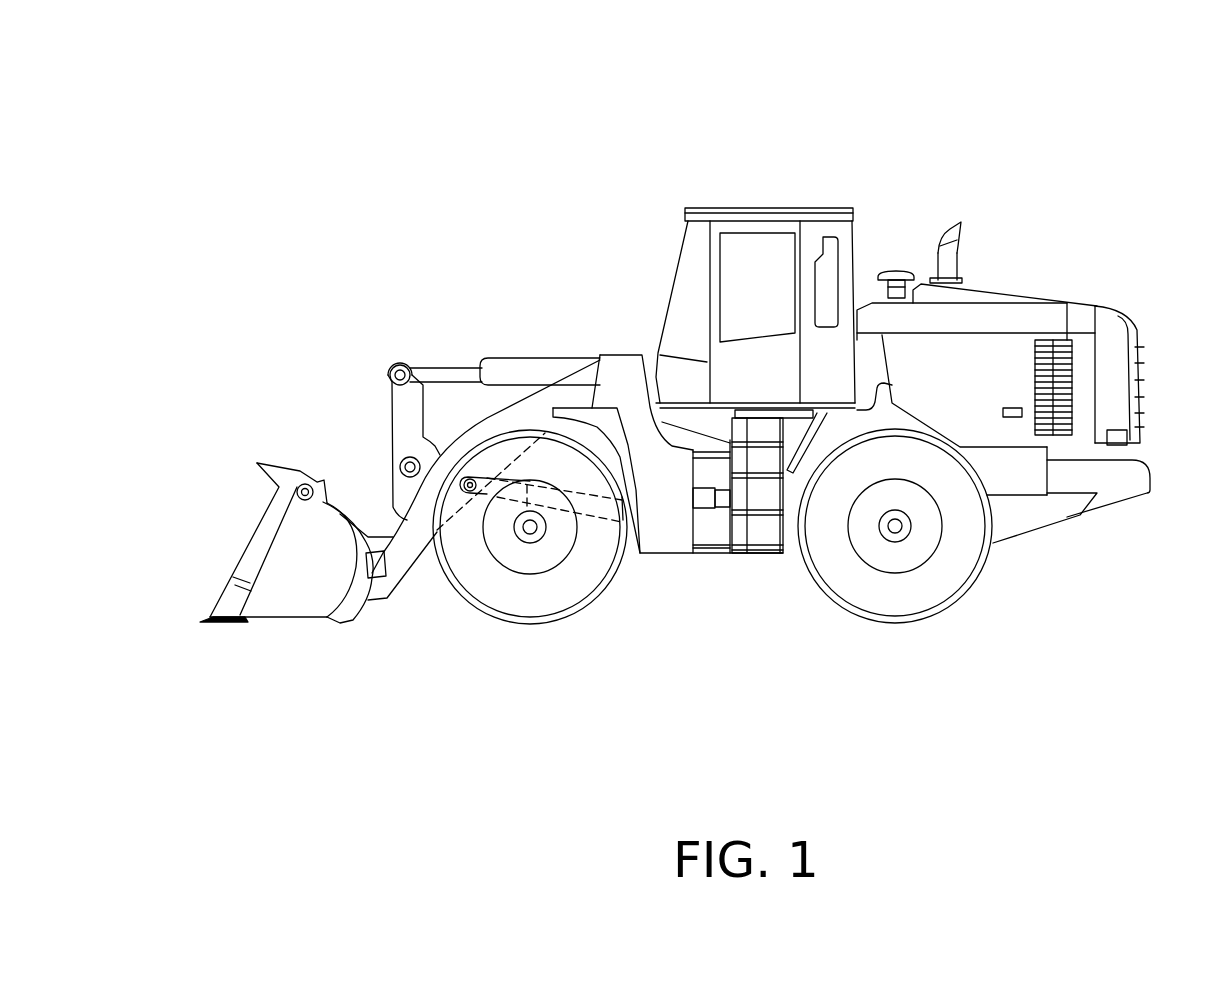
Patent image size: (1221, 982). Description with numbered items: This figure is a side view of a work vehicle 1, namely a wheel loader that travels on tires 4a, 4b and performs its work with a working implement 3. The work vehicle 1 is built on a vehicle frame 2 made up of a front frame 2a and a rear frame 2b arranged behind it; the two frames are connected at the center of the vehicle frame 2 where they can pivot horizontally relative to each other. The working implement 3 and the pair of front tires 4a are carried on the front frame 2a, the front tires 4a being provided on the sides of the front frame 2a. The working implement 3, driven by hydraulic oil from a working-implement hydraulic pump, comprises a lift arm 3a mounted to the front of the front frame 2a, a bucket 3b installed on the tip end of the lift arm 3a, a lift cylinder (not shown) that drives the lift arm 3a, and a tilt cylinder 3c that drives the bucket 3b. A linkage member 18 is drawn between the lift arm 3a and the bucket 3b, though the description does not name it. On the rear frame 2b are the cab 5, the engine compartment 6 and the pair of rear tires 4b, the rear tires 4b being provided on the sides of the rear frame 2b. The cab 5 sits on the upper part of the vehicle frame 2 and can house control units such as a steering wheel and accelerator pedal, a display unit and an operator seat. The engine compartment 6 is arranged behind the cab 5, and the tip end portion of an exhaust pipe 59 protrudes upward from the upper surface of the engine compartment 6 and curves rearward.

The work vehicle 1 is at (1121, 117).
The vehicle frame 2 is at (773, 672).
The front frame 2a is at (667, 590).
The rear frame 2b is at (763, 590).
The working implement 3 is at (335, 436).
The lift arm 3a is at (467, 435).
The bucket 3b is at (238, 582).
The tilt cylinder 3c is at (523, 373).
The front tires 4a is at (538, 605).
The rear tires 4b is at (898, 607).
The cab 5 is at (776, 190).
The engine compartment 6 is at (1027, 275).
The bell crank 18 is at (407, 413).
The exhaust pipe 59 is at (953, 237).